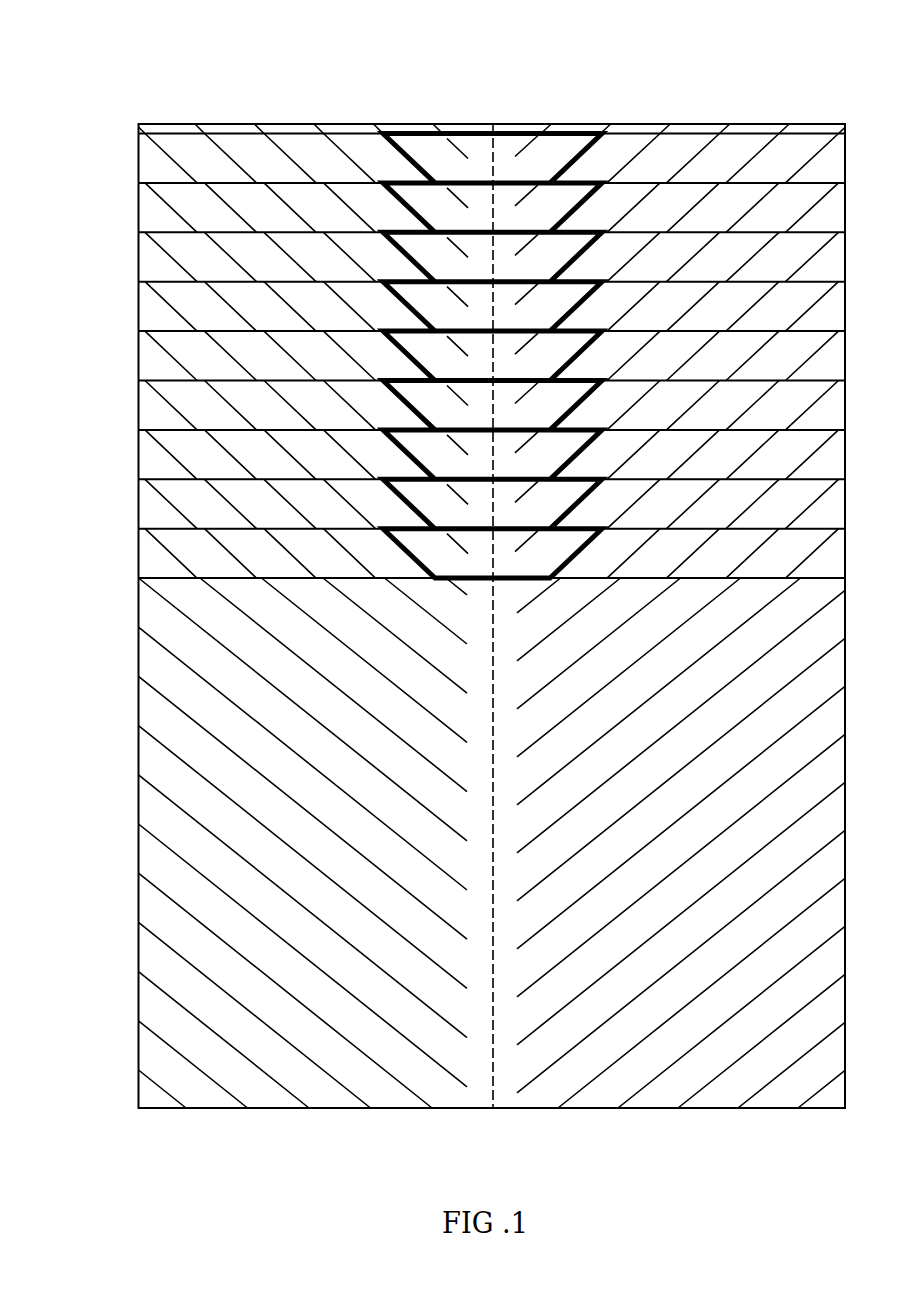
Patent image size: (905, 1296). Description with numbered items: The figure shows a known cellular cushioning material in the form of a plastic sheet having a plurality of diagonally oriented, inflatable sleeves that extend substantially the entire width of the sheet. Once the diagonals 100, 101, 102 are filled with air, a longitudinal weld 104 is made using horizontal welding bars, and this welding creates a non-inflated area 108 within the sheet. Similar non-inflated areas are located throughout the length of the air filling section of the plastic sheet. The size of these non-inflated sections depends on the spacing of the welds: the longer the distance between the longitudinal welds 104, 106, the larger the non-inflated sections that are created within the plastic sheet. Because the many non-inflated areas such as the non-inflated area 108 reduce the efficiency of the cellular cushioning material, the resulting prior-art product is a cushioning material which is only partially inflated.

The diagonal inflatable sleeve 100 is at (613, 148).
The diagonal inflatable sleeve 101 is at (683, 150).
The diagonal inflatable sleeve 102 is at (770, 162).
The longitudinal weld 104 is at (165, 182).
The longitudinal weld 106 is at (165, 232).
The non-inflated area 108 is at (498, 122).